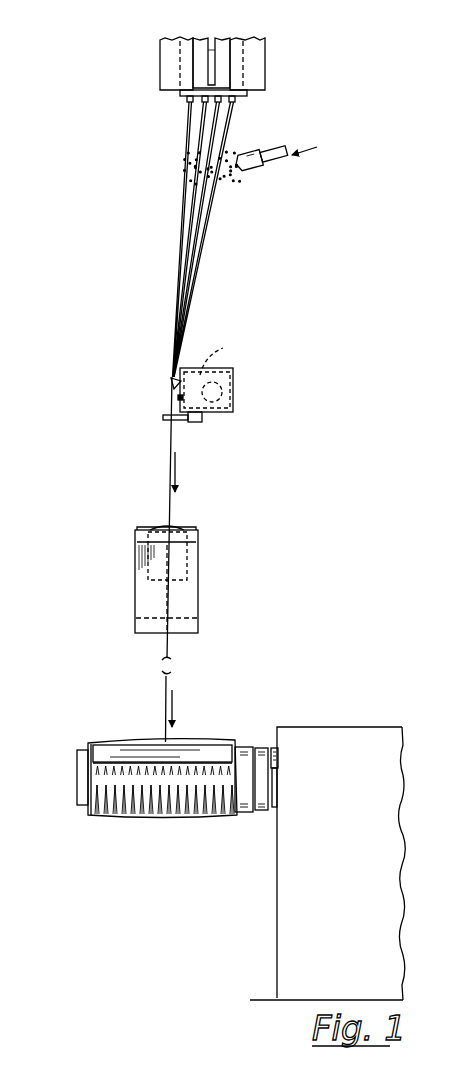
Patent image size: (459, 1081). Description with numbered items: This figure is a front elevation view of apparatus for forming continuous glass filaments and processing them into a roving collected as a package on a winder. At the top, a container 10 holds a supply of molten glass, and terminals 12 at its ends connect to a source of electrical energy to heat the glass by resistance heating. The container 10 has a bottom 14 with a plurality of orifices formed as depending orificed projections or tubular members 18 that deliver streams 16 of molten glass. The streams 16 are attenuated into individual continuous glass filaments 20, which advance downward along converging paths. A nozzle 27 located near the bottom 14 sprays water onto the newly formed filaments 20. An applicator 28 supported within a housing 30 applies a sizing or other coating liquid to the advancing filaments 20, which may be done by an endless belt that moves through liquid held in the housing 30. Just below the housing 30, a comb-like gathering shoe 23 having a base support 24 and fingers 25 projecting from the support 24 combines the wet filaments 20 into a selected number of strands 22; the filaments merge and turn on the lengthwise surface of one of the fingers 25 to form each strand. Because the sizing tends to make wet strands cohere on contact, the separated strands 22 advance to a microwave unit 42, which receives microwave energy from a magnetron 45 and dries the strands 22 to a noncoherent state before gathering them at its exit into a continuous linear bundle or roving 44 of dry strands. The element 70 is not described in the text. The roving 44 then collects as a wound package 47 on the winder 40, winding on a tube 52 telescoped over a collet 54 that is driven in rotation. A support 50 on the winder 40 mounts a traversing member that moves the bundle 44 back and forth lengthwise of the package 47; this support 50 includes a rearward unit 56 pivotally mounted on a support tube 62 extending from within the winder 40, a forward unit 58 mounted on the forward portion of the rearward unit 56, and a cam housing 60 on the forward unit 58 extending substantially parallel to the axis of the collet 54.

The container 10 is at (205, 36).
The terminals 12 is at (219, 50).
The bottom 14 is at (185, 96).
The streams 16 is at (226, 108).
The tubular members 18 is at (190, 101).
The continuous glass filaments 20 is at (178, 244).
The nozzle 27 is at (258, 172).
The strands 22 is at (170, 440).
The gathering shoe 23 is at (234, 419).
The base support 24 is at (198, 422).
The fingers 25 is at (163, 417).
The applicator 28 is at (229, 370).
The housing 30 is at (233, 373).
The microwave unit 42 is at (160, 525).
The magnetron 45 is at (137, 612).
The inner tube 70 is at (158, 588).
The strand bundle 44 is at (162, 683).
The winder 40 is at (343, 722).
The support 50 is at (245, 738).
The tube 52 is at (87, 745).
The collet 54 is at (77, 770).
The rearward unit 56 is at (262, 808).
The forward unit 58 is at (250, 811).
The cam housing 60 is at (142, 747).
The support tube 62 is at (274, 747).
The package 47 is at (147, 800).